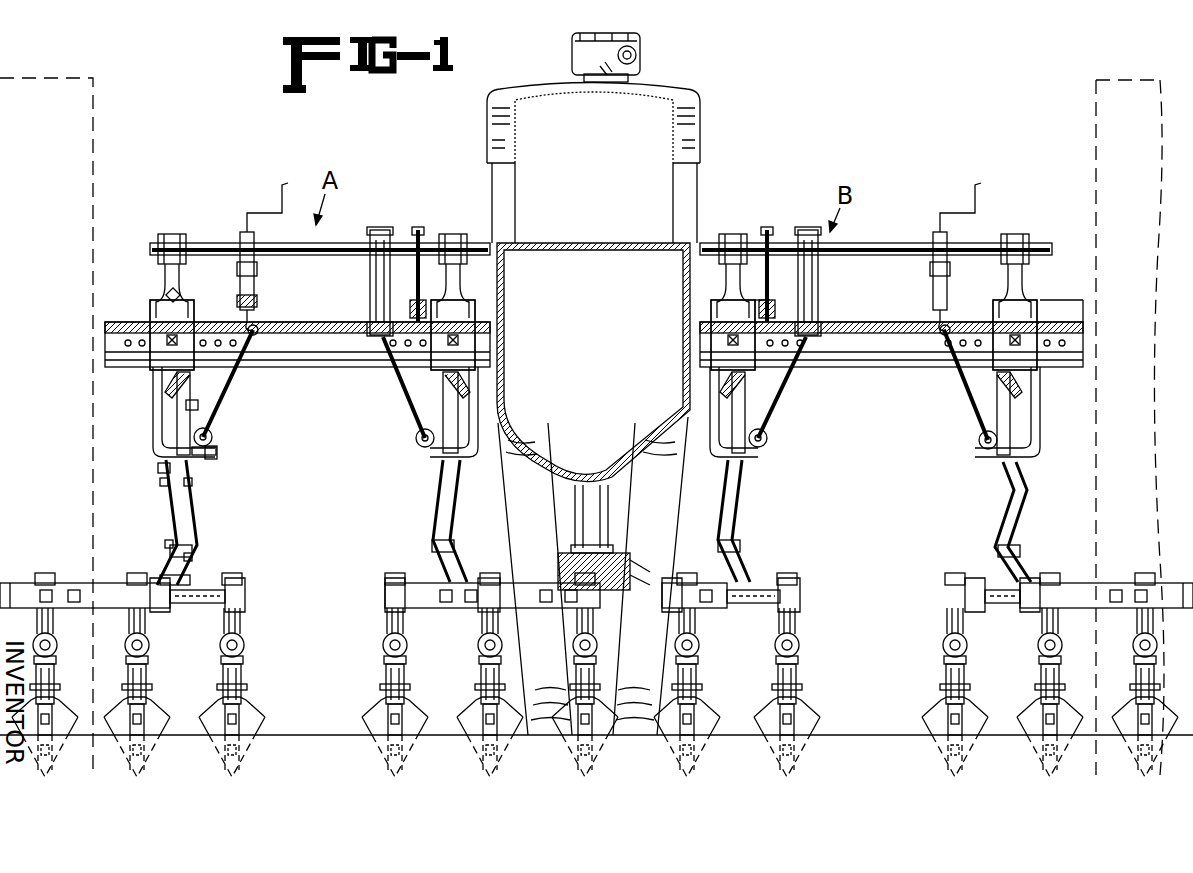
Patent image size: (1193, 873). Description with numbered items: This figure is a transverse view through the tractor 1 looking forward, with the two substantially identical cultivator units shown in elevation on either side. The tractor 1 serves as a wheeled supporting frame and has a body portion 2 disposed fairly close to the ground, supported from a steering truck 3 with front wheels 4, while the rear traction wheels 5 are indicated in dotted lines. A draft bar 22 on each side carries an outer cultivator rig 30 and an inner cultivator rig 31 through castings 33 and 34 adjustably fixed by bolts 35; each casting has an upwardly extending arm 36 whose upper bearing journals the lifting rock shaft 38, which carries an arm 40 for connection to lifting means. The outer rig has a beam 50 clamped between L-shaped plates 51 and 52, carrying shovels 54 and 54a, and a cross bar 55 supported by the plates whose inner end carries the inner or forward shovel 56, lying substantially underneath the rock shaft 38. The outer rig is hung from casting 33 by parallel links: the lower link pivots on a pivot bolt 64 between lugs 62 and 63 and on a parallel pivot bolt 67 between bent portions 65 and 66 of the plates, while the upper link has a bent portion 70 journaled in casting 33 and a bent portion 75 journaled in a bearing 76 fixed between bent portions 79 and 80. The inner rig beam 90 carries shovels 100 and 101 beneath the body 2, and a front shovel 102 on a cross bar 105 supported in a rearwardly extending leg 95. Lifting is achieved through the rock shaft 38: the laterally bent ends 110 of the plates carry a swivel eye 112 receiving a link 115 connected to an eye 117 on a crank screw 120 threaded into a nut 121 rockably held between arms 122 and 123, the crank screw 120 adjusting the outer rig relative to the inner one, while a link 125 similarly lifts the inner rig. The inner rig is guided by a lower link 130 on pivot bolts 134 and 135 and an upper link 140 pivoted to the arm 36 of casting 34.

The tractor 1 is at (666, 86).
The body portion 2 is at (536, 456).
The steering truck 3 is at (598, 488).
The front wheels 4 is at (528, 562).
The rear traction wheels 5 is at (80, 120).
The draft bar 22 is at (320, 367).
The outer cultivator rig 30 is at (235, 588).
The inner cultivator rig 31 is at (430, 528).
The casting 33 is at (152, 330).
The casting 34 is at (710, 318).
The bolts 35 is at (1042, 330).
The upwardly extending arm 36 is at (190, 262).
The lifting rock shaft 38 is at (222, 243).
The arm 40 is at (388, 262).
The beam 50 is at (105, 606).
The L-shaped plate 51 is at (168, 510).
The L-shaped plate 52 is at (192, 524).
The shovel 54 is at (60, 730).
The shovel 54a is at (150, 730).
The cross bar 55 is at (205, 603).
The inner or forward shovel 56 is at (247, 730).
The lug 62 is at (176, 378).
The lug 63 is at (230, 392).
The pivot bolt 64 is at (217, 426).
The bent portion 65 is at (168, 543).
The bent portion 66 is at (192, 555).
The pivot bolt 67 is at (212, 578).
The bent portion 70 is at (180, 300).
The bent portion 75 is at (190, 486).
The bearing 76 is at (164, 486).
The bent portion 79 is at (158, 470).
The bent portion 80 is at (214, 470).
The inner rig beam 90 is at (520, 585).
The rearwardly extending leg 95 is at (442, 600).
The shovel 100 is at (473, 728).
The shovel 101 is at (568, 728).
The front shovel 102 is at (380, 730).
The cross bar 105 is at (395, 590).
The laterally bent ends 110 is at (214, 452).
The swivel eye 112 is at (213, 438).
The link 115 is at (200, 404).
The eye 117 is at (262, 326).
The crank screw 120 is at (605, 251).
The nut 121 is at (526, 274).
The arm 122 is at (226, 269).
The arm 123 is at (593, 281).
The link 125 is at (770, 432).
The lower link 130 is at (456, 538).
The pivot bolt 134 is at (420, 446).
The pivot bolt 135 is at (438, 564).
The upper link 140 is at (473, 470).